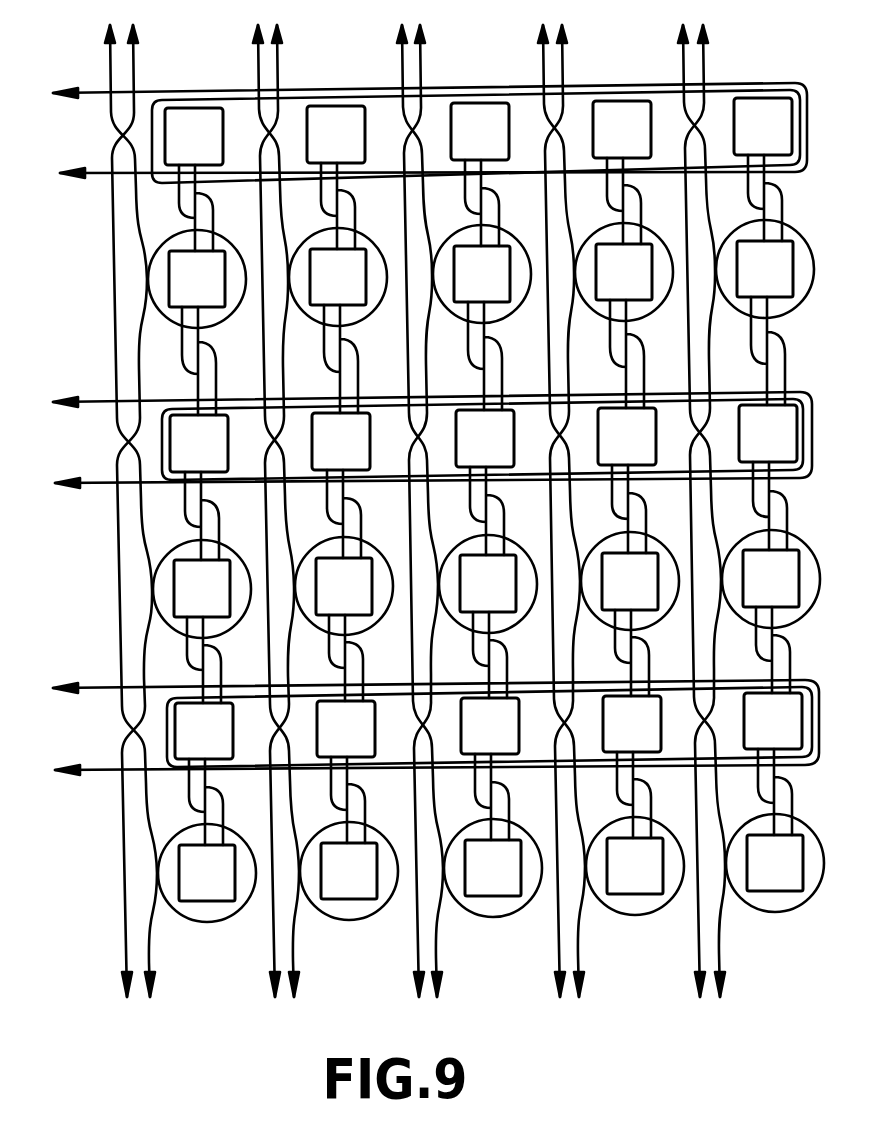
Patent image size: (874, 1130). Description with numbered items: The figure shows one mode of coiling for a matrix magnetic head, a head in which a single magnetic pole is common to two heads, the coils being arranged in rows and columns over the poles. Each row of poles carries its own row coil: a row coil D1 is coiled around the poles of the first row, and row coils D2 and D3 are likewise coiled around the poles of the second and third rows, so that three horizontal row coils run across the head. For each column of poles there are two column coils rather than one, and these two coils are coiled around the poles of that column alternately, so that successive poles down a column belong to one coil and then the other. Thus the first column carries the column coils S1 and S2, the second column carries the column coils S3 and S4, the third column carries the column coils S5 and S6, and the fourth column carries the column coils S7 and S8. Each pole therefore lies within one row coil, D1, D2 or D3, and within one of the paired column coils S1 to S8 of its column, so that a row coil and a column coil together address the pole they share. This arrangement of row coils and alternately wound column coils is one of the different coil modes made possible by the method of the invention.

The column coil S1 is at (165, 513).
The column coil S2 is at (181, 513).
The column coil S3 is at (310, 513).
The column coil S4 is at (326, 513).
The column coil S5 is at (455, 513).
The column coil S6 is at (470, 513).
The column coil S7 is at (596, 513).
The column coil S8 is at (612, 513).
The row coil D1 is at (412, 133).
The row coil D2 is at (423, 440).
The row coil D3 is at (431, 727).